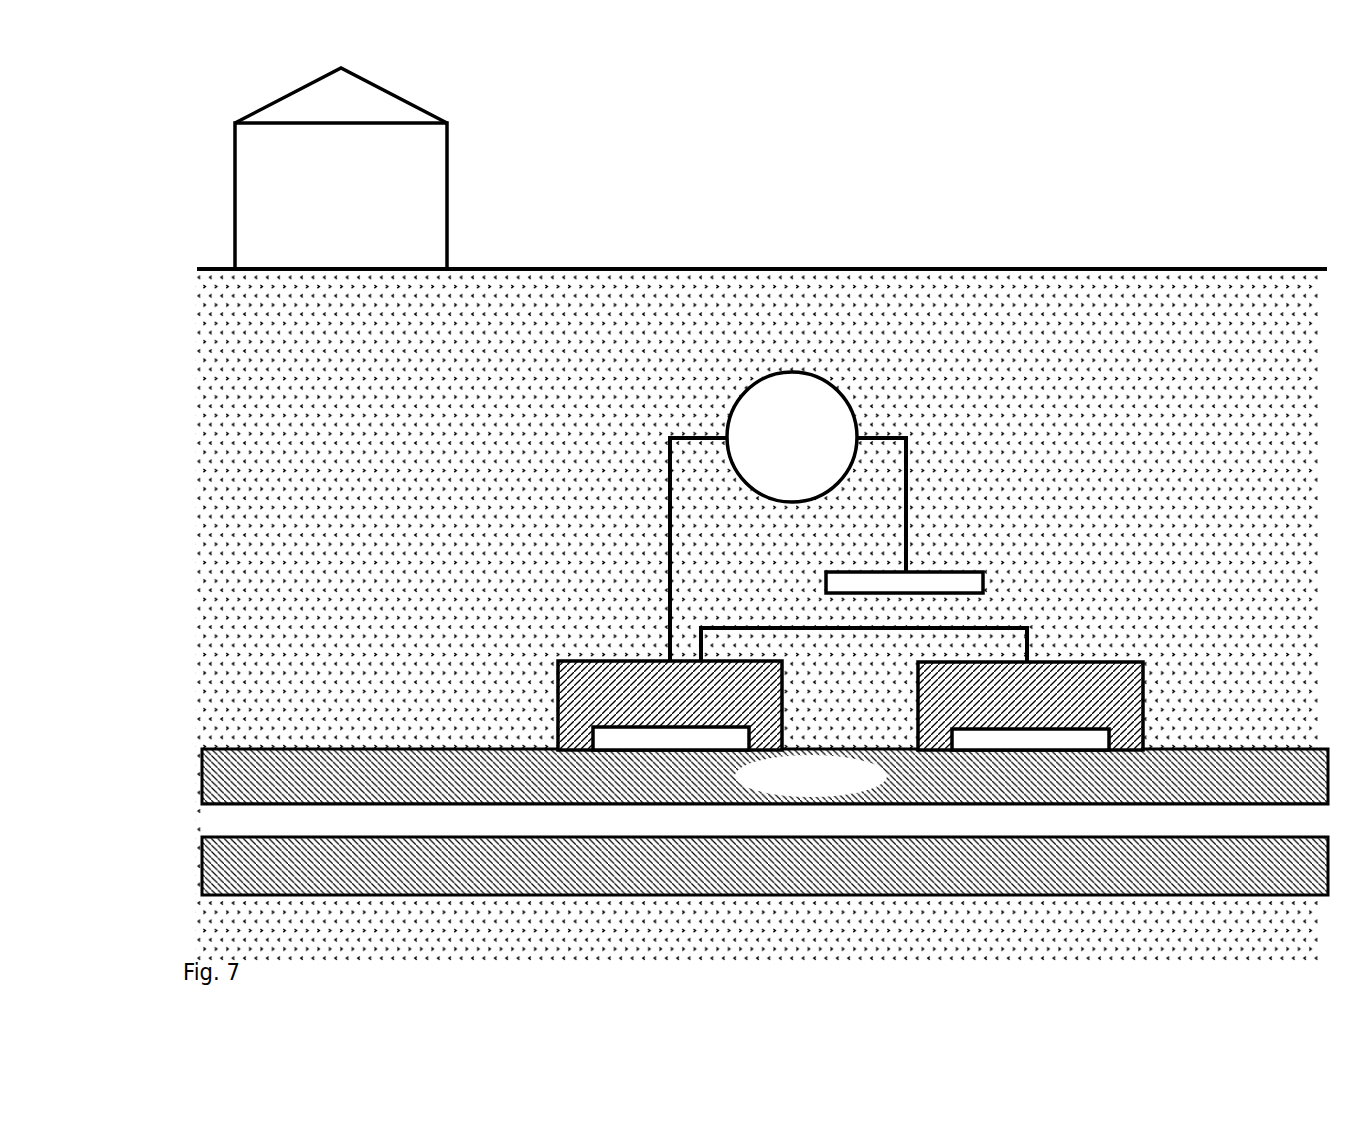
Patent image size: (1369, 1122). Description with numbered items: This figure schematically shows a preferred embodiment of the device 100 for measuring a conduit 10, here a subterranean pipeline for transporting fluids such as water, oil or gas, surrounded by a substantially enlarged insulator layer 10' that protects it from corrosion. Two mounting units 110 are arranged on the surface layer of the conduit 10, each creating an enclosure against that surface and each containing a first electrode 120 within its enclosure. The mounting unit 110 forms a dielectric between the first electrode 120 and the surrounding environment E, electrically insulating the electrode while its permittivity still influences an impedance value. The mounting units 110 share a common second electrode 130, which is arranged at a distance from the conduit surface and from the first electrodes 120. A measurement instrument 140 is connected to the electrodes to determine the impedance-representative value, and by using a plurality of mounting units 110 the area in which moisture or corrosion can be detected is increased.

The conduit 10 is at (733, 802).
The insulator layer 10' is at (733, 732).
The device 100 is at (579, 394).
The mounting unit 110 is at (600, 684).
The first electrode 120 is at (597, 745).
The second electrode 130 is at (983, 583).
The measurement instrument 140 is at (792, 437).
The environment E is at (756, 618).